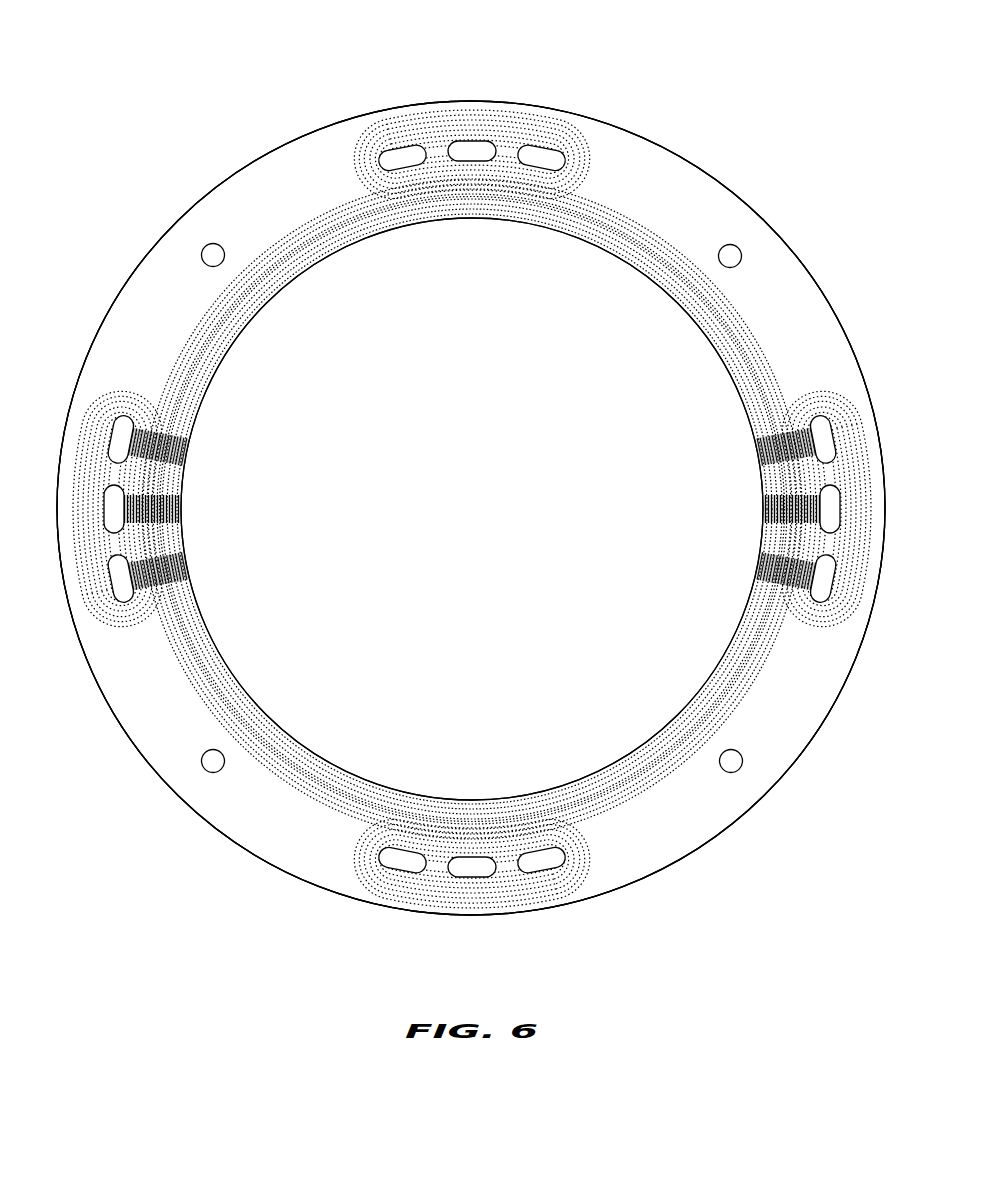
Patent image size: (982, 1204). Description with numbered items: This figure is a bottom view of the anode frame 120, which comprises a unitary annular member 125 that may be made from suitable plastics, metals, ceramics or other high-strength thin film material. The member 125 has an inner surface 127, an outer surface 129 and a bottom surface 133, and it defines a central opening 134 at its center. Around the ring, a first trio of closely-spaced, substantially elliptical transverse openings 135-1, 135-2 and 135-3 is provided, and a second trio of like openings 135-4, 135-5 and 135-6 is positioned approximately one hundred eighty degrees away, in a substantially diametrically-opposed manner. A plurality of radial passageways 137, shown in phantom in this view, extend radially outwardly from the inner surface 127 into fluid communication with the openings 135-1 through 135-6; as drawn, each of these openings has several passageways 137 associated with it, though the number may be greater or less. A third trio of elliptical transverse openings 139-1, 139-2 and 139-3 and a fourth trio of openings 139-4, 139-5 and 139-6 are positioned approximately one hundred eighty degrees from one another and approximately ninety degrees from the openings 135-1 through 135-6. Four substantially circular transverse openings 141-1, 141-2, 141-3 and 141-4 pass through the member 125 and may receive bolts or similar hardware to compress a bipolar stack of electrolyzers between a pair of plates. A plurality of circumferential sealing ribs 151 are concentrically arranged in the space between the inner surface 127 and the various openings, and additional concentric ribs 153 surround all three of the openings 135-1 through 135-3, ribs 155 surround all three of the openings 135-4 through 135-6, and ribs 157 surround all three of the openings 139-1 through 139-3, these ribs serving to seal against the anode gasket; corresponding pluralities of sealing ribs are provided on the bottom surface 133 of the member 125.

The anode frame 120 is at (272, 920).
The unitary annular member 125 is at (268, 720).
The inner surface 127 is at (715, 350).
The outer surface 129 is at (800, 258).
The bottom surface 133 is at (688, 180).
The central opening 134 is at (485, 516).
The transverse opening 135-1 is at (828, 598).
The transverse opening 135-2 is at (838, 500).
The transverse opening 135-3 is at (822, 427).
The transverse opening 135-4 is at (120, 595).
The transverse opening 135-5 is at (105, 500).
The transverse opening 135-6 is at (118, 432).
The radial passageway 137 is at (180, 568).
The transverse opening 139-1 is at (543, 158).
The transverse opening 139-2 is at (471, 152).
The transverse opening 139-3 is at (402, 157).
The transverse opening 139-4 is at (543, 862).
The transverse opening 139-5 is at (467, 866).
The transverse opening 139-6 is at (402, 865).
The circular transverse opening 141-1 is at (730, 248).
The circular transverse opening 141-2 is at (212, 248).
The circular transverse opening 141-3 is at (212, 752).
The circular transverse opening 141-4 is at (728, 752).
The circumferential sealing ribs 151 is at (618, 238).
The concentric ribs 153 is at (822, 627).
The concentric ribs 155 is at (125, 625).
The concentric ribs 157 is at (590, 160).